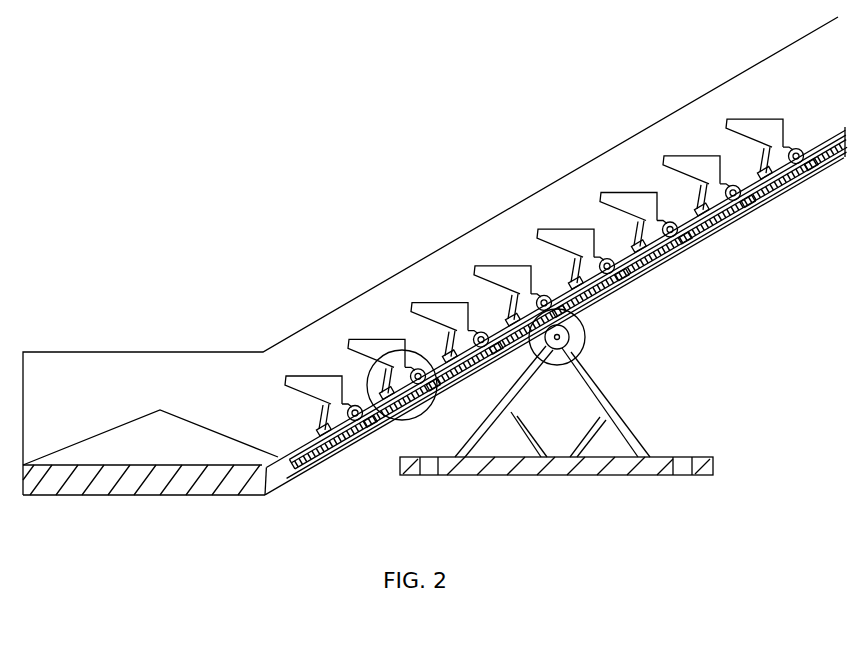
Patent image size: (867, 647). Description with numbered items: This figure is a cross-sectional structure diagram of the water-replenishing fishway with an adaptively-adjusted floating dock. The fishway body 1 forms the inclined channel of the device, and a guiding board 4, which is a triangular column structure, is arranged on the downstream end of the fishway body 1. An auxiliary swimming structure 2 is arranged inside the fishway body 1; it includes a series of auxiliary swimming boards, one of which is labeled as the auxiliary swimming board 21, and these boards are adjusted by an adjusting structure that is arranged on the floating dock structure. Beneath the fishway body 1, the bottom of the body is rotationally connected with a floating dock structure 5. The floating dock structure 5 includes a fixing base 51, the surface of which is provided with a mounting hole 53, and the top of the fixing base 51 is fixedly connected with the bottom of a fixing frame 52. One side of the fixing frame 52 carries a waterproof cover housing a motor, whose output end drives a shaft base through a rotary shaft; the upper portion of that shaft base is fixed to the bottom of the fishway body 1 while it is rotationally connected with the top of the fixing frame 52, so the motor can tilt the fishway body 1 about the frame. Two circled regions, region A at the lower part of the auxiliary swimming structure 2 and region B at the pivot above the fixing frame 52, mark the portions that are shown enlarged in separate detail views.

The fishway body 1 is at (207, 477).
The guiding board 4 is at (137, 445).
The auxiliary swimming structure 2 is at (623, 211).
The auxiliary swimming board 21 is at (493, 266).
The floating dock structure 5 is at (517, 387).
The fixing base 51 is at (537, 473).
The fixing frame 52 is at (630, 422).
The mounting hole 53 is at (432, 467).
The enlarged region A is at (355, 378).
The enlarged region B is at (585, 328).